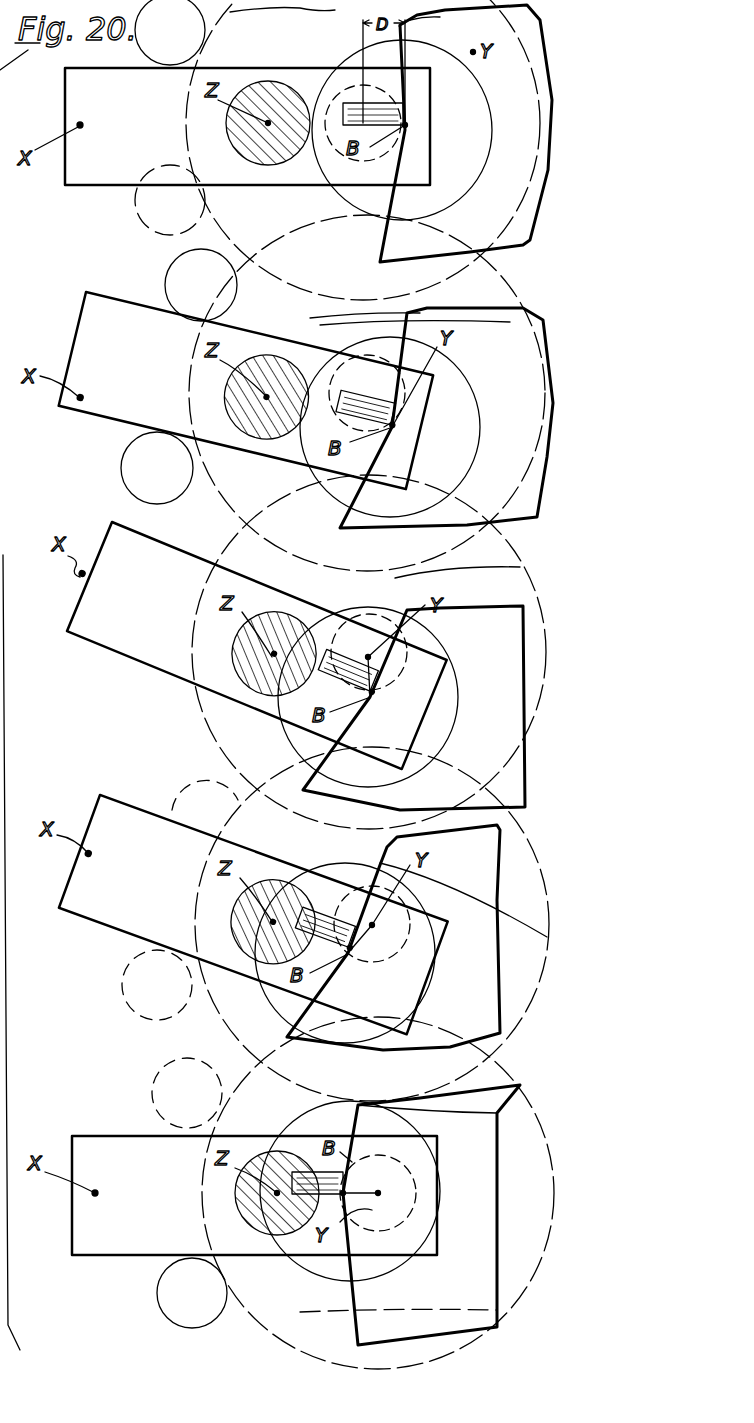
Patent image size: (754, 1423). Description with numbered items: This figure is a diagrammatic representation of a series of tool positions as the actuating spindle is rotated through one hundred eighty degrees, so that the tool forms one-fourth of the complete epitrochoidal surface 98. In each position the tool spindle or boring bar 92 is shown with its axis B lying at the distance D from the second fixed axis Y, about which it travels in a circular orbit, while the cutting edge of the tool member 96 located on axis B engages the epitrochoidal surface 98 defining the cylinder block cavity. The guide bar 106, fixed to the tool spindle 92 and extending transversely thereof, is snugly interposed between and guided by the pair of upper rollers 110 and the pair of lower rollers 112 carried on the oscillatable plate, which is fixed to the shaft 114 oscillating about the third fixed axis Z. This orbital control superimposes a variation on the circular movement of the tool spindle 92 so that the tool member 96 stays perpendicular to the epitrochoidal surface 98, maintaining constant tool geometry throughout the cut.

The tool spindle 92 is at (391, 675).
The tool member 96 is at (405, 125).
The epitrochoidal surface 98 is at (345, 237).
The guide bar 106 is at (77, 170).
The upper rollers 110 is at (185, 47).
The lower rollers 112 is at (185, 226).
The shaft 114 is at (272, 158).